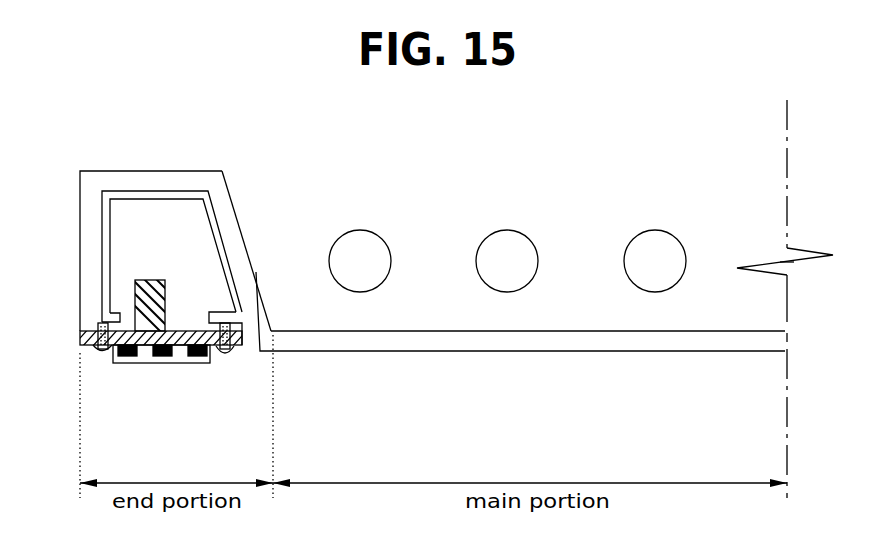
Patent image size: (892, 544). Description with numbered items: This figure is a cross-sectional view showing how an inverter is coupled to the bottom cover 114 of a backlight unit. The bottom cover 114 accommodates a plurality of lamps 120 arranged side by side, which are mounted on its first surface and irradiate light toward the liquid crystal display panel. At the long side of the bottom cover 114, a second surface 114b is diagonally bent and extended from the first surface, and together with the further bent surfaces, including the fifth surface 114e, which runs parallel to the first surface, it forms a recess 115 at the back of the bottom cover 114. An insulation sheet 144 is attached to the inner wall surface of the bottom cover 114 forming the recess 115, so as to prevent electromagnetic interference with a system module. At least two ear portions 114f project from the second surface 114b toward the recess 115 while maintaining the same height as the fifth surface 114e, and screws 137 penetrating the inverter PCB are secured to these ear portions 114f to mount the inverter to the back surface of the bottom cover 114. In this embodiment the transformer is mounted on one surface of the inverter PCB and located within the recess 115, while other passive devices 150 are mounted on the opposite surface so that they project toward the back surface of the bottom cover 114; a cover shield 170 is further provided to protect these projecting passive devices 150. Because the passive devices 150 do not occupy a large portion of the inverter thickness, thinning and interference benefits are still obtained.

The bottom cover 114 is at (153, 166).
The second surface 114b is at (230, 225).
The fifth surface 114e is at (115, 353).
The ear portions 114f is at (240, 323).
The recess 115 is at (178, 235).
The insulation sheet 144 is at (105, 258).
The screws 137 is at (100, 348).
The passive devices 150 is at (160, 364).
The cover shield 170 is at (195, 364).
The lamps 120 is at (358, 243).